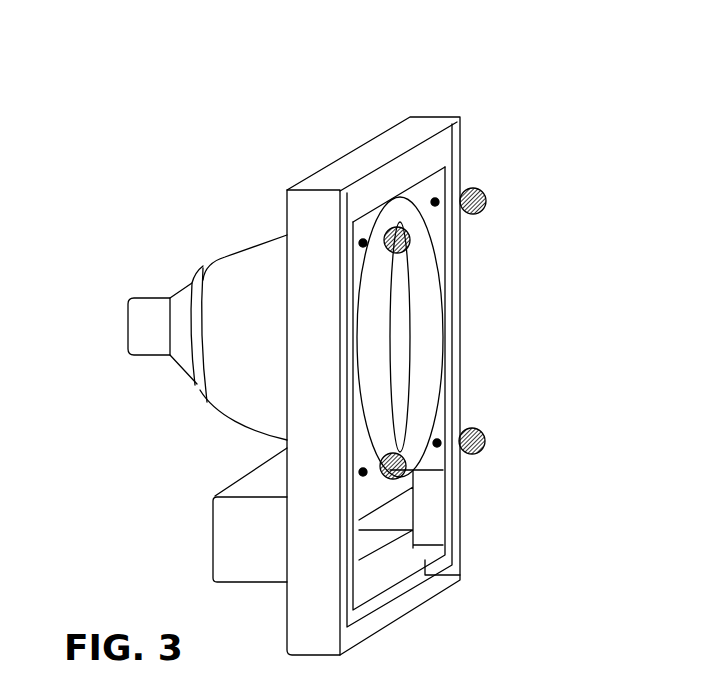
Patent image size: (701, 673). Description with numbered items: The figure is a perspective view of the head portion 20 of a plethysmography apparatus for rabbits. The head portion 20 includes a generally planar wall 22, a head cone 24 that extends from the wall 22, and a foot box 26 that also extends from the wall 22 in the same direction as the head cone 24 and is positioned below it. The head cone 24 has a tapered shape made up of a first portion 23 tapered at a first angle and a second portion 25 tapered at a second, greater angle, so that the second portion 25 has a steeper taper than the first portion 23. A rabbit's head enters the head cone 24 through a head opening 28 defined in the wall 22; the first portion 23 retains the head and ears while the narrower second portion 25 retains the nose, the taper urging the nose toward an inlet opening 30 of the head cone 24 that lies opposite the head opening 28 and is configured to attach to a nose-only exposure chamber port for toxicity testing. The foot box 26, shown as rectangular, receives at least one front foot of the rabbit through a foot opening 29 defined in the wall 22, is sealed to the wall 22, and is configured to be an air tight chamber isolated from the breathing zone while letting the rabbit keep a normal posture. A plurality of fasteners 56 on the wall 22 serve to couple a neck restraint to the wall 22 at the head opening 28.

The head portion 20 is at (503, 72).
The wall 22 is at (394, 132).
The first portion 23 is at (220, 260).
The head cone 24 is at (253, 238).
The second portion 25 is at (185, 287).
The foot box 26 is at (237, 493).
The head opening 28 is at (383, 327).
The foot opening 29 is at (385, 530).
The inlet opening 30 is at (128, 326).
The fasteners 56 is at (410, 243).